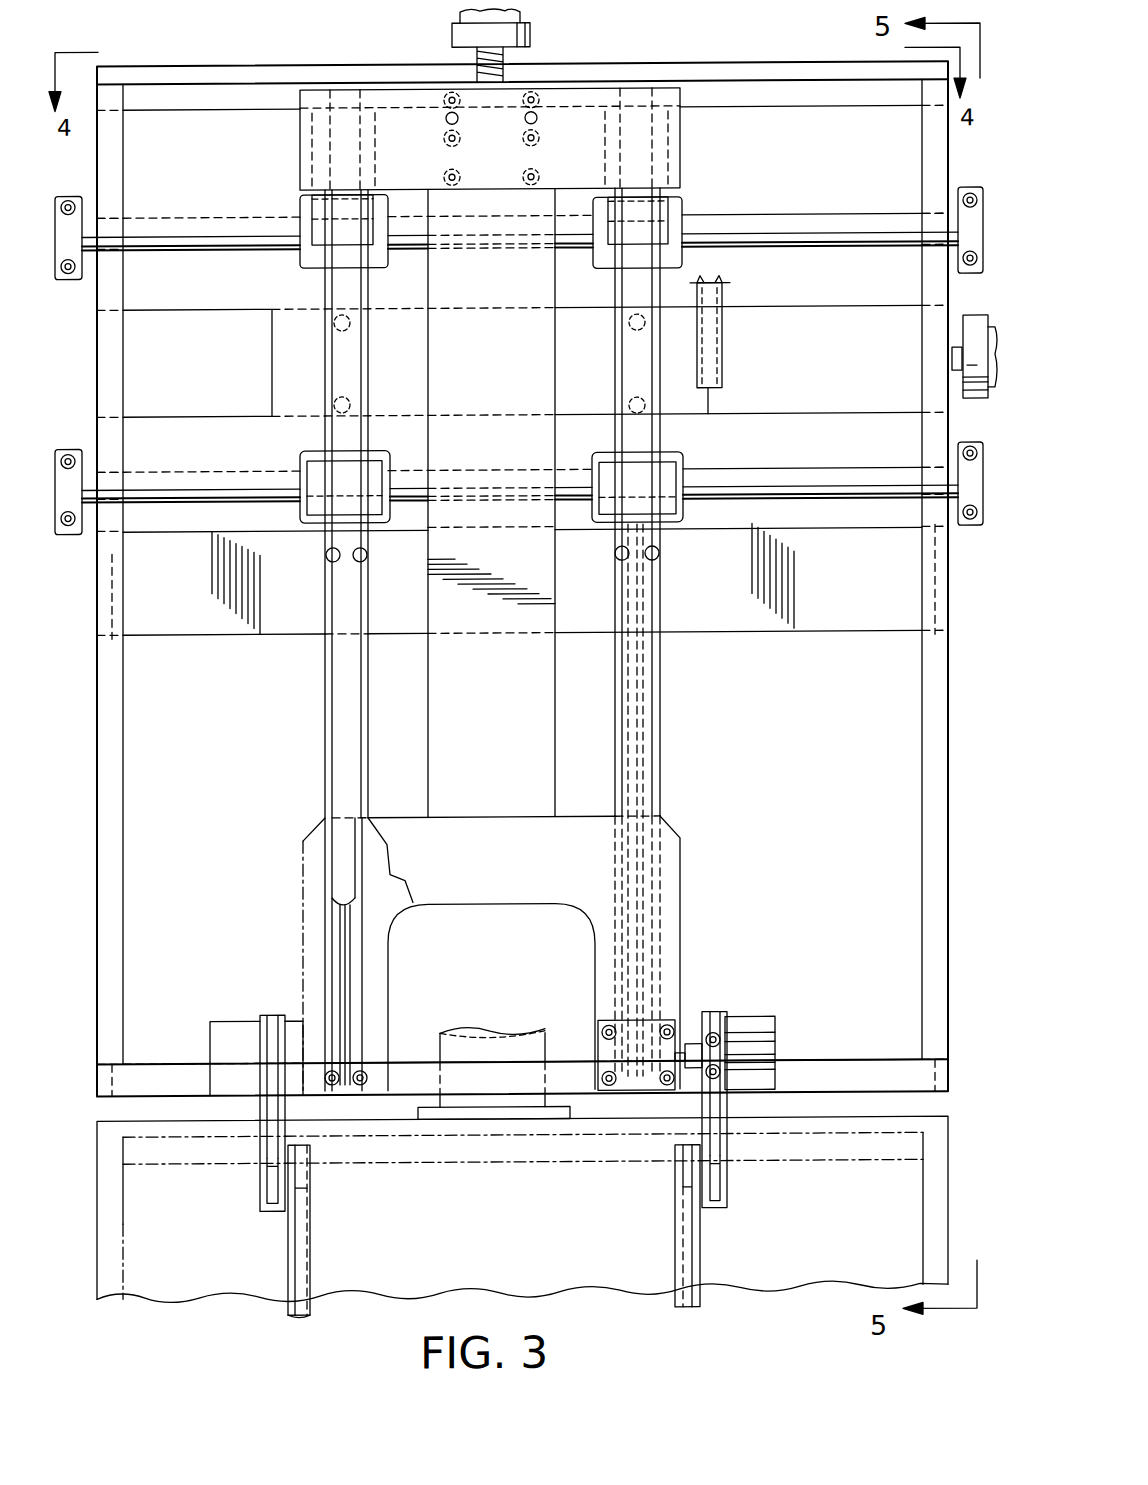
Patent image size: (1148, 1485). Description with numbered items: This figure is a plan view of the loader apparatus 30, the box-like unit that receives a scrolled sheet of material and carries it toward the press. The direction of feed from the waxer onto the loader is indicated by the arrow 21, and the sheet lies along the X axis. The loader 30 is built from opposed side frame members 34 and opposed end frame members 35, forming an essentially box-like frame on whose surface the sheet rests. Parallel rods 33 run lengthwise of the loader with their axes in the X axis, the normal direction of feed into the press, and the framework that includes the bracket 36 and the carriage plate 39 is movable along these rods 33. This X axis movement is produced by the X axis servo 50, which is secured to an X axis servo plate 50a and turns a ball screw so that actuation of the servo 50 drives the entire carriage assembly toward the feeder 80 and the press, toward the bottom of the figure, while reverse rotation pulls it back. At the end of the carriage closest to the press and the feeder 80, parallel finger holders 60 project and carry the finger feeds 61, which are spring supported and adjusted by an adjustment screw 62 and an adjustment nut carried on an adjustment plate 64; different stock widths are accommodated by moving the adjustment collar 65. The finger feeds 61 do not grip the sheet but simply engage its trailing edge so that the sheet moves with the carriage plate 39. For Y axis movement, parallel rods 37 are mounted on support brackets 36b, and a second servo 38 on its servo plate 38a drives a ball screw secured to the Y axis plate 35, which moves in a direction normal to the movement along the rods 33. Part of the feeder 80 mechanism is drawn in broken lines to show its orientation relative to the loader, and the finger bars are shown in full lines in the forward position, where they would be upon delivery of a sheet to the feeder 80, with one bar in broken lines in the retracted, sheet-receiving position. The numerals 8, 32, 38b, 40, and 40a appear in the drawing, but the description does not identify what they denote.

The base plate 8 is at (310, 1234).
The arrow 21 is at (85, 760).
The loader apparatus 30 is at (345, 55).
The upper guide clamp 32 is at (300, 209).
The parallel rods 33 is at (340, 770).
The side frame member 34 is at (932, 808).
The end frame member 35 is at (745, 68).
The bracket 36 is at (682, 164).
The support bracket 36b is at (72, 197).
The parallel rods 37 is at (810, 223).
The second servo 38 is at (997, 410).
The servo plate 38a is at (973, 327).
The sensor actuator 38b is at (952, 370).
The carriage plate 39 is at (325, 295).
The stop member 40 is at (752, 406).
The stop pin 40a is at (628, 326).
The X axis servo 50 is at (530, 15).
The X axis servo plate 50a is at (530, 42).
The finger holder 60 is at (258, 1182).
The finger feed 61 is at (270, 1198).
The adjustment screw 62 is at (767, 1063).
The adjustment plate 64 is at (273, 1215).
The adjustment collar 65 is at (688, 1041).
The feeder 80 is at (296, 1324).